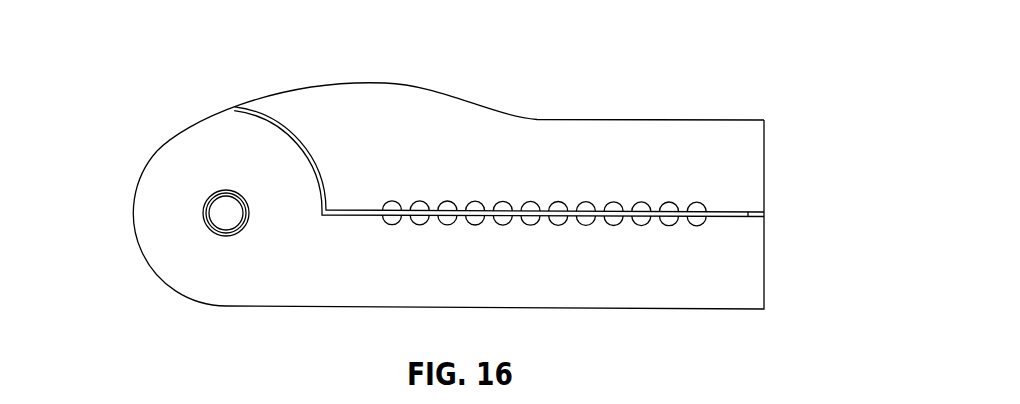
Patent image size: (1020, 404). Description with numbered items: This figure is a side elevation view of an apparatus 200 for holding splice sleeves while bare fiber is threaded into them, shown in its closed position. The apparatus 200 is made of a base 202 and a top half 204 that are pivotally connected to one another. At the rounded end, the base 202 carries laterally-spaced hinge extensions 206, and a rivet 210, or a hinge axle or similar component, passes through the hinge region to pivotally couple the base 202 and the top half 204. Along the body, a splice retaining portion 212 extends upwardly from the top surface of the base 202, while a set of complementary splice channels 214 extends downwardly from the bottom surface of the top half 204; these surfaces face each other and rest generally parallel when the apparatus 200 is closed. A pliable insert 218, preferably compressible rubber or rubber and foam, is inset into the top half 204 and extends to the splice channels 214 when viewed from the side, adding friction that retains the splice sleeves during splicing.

The apparatus 200 is at (830, 113).
The base 202 is at (742, 312).
The top half 204 is at (698, 115).
The hinge extensions 206 is at (132, 228).
The rivet 210 is at (223, 213).
The splice retaining portion 212 is at (698, 225).
The splice channels 214 is at (705, 203).
The pliable insert 218 is at (475, 205).